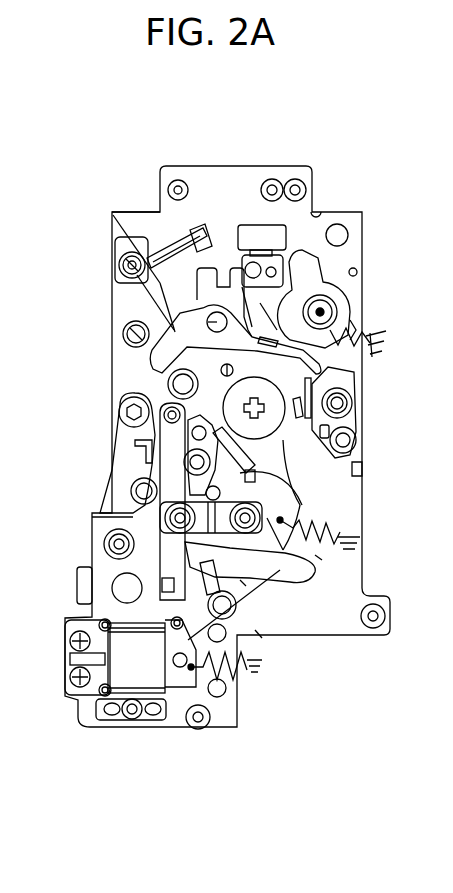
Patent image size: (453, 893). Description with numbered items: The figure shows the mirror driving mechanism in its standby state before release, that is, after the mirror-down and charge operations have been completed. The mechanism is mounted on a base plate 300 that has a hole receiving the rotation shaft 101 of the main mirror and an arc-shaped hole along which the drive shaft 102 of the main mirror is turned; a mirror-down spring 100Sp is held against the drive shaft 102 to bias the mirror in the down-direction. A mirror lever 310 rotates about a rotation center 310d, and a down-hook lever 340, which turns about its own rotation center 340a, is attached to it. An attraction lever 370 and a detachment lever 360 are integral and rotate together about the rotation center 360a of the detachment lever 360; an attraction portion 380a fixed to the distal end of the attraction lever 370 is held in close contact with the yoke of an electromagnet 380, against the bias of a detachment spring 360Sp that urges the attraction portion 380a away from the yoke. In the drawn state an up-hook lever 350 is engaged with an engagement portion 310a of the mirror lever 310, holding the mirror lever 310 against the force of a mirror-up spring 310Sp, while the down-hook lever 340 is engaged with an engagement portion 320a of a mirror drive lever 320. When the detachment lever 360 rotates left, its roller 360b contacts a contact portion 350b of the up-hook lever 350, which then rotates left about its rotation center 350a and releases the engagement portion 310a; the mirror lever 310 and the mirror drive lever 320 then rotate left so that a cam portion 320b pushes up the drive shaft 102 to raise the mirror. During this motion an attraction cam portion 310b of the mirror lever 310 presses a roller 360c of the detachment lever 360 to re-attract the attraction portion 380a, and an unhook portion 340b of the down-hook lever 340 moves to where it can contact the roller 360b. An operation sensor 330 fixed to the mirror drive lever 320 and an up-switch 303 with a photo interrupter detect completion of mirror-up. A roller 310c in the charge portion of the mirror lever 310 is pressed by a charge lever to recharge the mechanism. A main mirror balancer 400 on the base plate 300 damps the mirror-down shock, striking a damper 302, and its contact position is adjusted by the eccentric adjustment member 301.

The rotation shaft 101 is at (355, 268).
The drive shaft 102 is at (322, 306).
The mirror-down spring 100Sp is at (367, 340).
The base plate 300 is at (160, 345).
The adjustment member 301 is at (114, 396).
The damper 302 is at (84, 567).
The up-switch (UPSW) 303 is at (160, 233).
The mirror lever 310 is at (305, 473).
The engagement portion 310a is at (243, 583).
The attraction cam portion 310b is at (322, 557).
The roller 310c is at (262, 640).
The rotation center 310d is at (312, 453).
The mirror-up spring 310Sp is at (343, 565).
The mirror drive lever 320 is at (345, 352).
The engagement portion 320a is at (260, 303).
The cam portion 320b is at (353, 327).
The operation sensor 330 is at (260, 236).
The down-hook lever 340 is at (122, 262).
The rotation center 340a is at (168, 253).
The unhook portion 340b is at (130, 292).
The up-hook lever 350 is at (126, 470).
The rotation center 350a is at (160, 520).
The contact portion 350b is at (114, 455).
The detachment lever 360 is at (120, 410).
The rotation center 360a is at (132, 484).
The roller 360b is at (126, 338).
The roller 360c is at (263, 560).
The detachment spring 360Sp is at (248, 674).
The attraction lever 370 is at (112, 495).
The electromagnet 380 is at (110, 705).
The attraction portion 380a is at (157, 700).
The main mirror balancer 400 is at (124, 574).